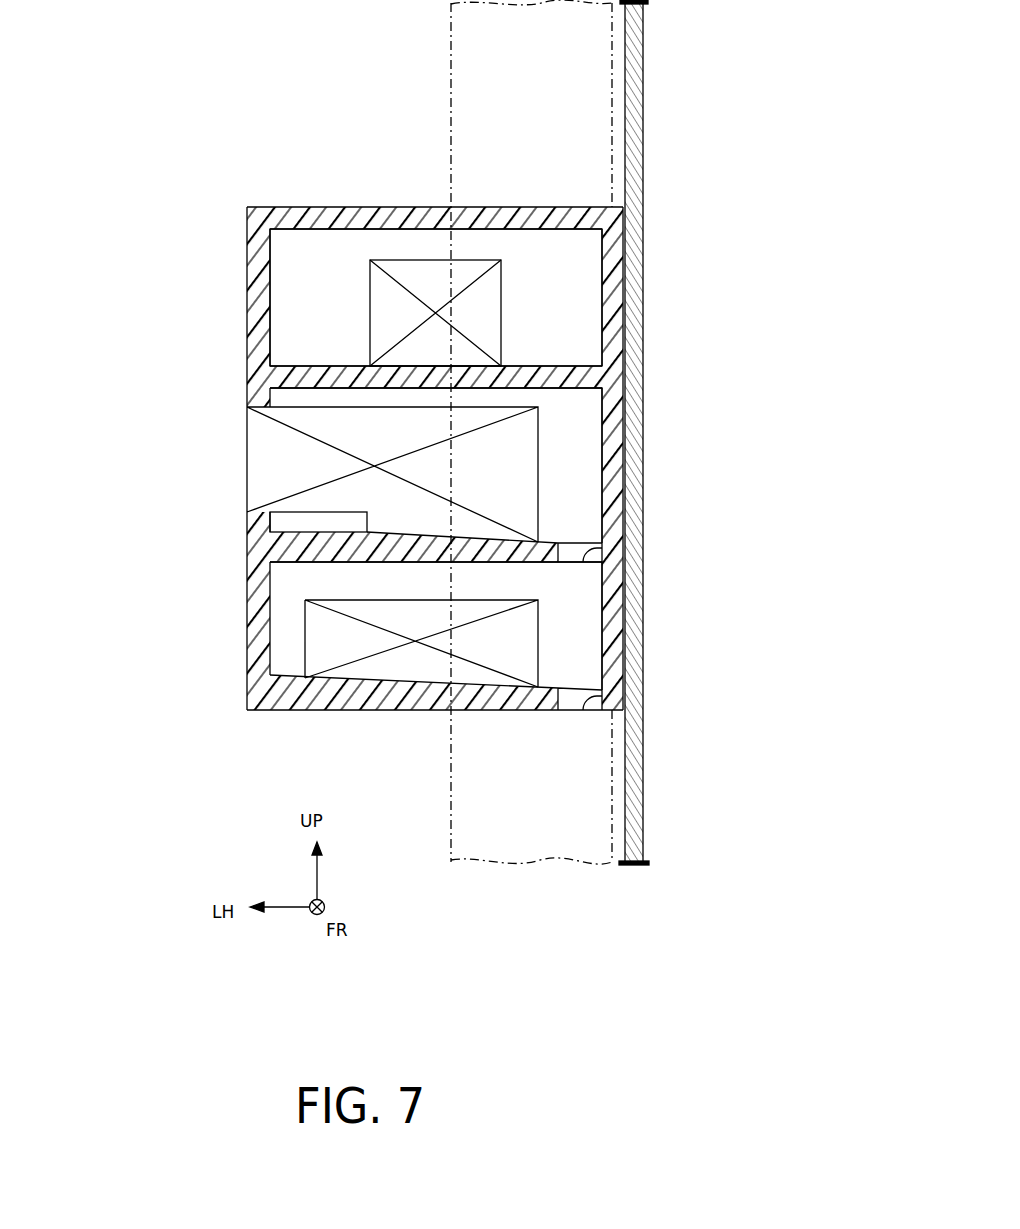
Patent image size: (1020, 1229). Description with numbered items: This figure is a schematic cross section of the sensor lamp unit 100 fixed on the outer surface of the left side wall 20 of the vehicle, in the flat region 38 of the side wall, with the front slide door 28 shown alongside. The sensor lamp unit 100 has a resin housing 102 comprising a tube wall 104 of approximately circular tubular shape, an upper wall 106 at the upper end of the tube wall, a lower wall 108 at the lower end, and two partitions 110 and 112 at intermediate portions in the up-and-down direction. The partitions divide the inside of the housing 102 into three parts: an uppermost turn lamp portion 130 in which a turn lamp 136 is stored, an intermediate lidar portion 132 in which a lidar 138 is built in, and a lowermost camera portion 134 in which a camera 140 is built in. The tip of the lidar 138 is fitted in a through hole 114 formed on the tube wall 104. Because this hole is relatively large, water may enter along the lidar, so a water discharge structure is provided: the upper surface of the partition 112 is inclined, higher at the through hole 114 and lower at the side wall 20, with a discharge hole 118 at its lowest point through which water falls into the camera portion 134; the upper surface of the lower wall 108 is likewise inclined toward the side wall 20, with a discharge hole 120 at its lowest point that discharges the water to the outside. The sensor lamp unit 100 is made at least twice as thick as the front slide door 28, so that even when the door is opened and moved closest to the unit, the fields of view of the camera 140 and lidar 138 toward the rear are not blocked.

The left side wall 20 is at (645, 95).
The front slide door 28 is at (452, 43).
The region 38 is at (719, 432).
The sensor lamp unit 100 is at (240, 138).
The housing 102 is at (236, 218).
The tube wall 104 is at (247, 335).
The upper wall 106 is at (338, 207).
The lower wall 108 is at (302, 710).
The partition 110 is at (305, 366).
The partition 112 is at (300, 562).
The through hole 114 is at (250, 430).
The discharge hole 118 is at (590, 554).
The discharge hole 120 is at (590, 701).
The turn lamp portion 130 is at (282, 258).
The lidar portion 132 is at (283, 398).
The camera portion 134 is at (282, 600).
The turn lamp 136 is at (371, 305).
The lidar 138 is at (247, 460).
The camera 140 is at (305, 640).